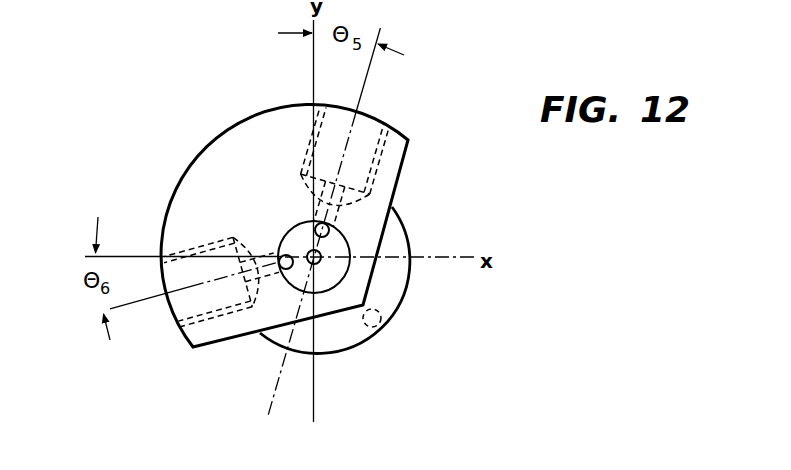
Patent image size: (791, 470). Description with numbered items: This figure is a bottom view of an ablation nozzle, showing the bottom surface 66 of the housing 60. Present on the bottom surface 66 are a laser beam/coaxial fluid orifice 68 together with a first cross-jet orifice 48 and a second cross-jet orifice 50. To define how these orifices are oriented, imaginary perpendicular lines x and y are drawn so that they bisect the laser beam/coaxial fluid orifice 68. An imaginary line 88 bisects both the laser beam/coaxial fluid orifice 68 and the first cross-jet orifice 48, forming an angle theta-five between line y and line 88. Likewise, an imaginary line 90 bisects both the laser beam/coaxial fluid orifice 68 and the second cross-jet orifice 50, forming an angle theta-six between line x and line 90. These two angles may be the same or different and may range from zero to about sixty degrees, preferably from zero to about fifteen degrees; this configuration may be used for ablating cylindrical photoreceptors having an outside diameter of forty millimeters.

The bottom surface 66 is at (209, 150).
The imaginary line 88 is at (371, 62).
The imaginary line 90 is at (108, 309).
The housing 60 is at (404, 277).
The first cross-jet orifice 48 is at (329, 230).
The laser beam/coaxial fluid orifice 68 is at (321, 253).
The second cross-jet orifice 50 is at (285, 269).